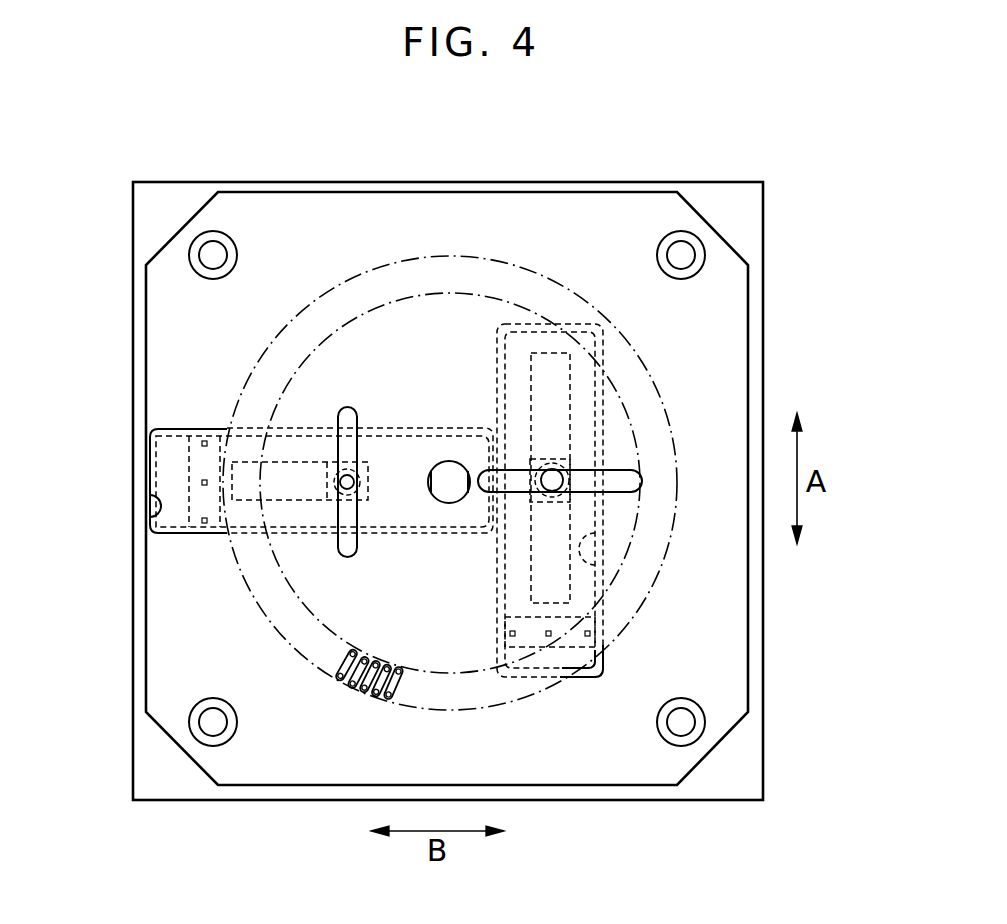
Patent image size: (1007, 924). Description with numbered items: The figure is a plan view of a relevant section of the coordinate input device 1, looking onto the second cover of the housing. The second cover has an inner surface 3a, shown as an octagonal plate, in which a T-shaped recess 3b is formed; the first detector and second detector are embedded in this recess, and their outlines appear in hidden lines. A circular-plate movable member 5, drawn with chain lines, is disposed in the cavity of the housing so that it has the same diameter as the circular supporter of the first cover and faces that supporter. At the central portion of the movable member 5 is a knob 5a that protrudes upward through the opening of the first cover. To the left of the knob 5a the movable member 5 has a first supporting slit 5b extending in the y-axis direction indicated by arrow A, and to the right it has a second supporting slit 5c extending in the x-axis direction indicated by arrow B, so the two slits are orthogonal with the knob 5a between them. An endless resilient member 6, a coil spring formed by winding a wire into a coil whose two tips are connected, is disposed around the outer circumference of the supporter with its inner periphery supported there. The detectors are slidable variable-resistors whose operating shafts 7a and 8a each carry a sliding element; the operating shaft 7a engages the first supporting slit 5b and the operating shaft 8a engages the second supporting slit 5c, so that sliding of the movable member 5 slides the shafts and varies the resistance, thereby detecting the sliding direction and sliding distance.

The coordinate input device 1 is at (167, 165).
The inner surface 3a is at (720, 640).
The T-shaped recess 3b is at (152, 510).
The movable member 5 is at (405, 335).
The knob 5a is at (448, 476).
The first supporting slit 5b is at (348, 412).
The second supporting slit 5c is at (617, 481).
The resilient member 6 is at (350, 687).
The operating shaft 7a is at (340, 481).
The operating shaft 8a is at (552, 480).